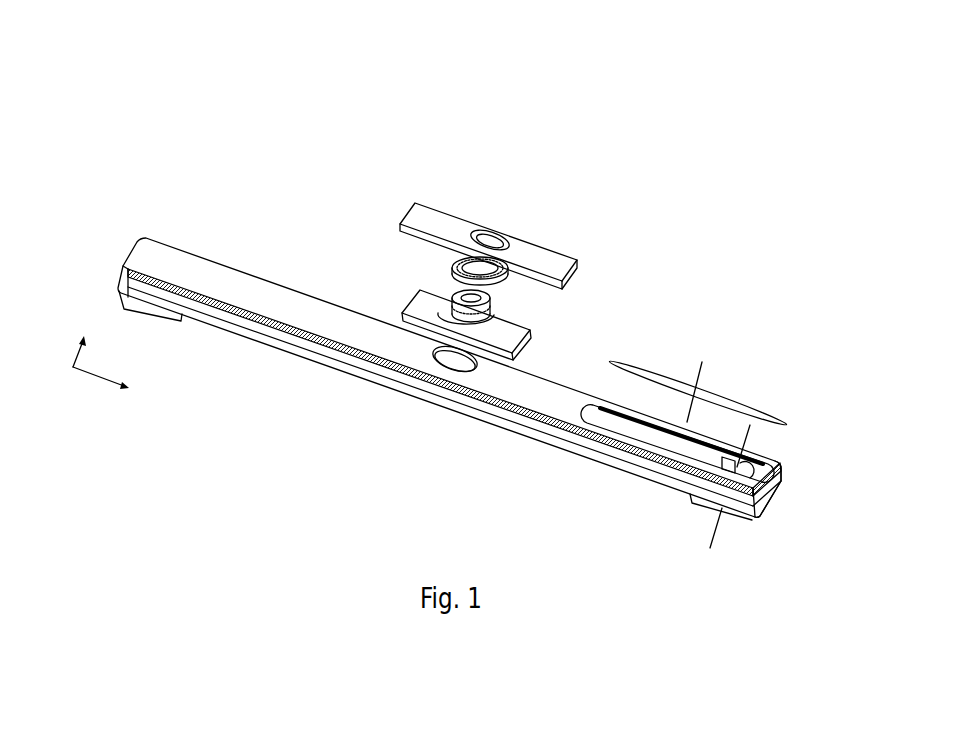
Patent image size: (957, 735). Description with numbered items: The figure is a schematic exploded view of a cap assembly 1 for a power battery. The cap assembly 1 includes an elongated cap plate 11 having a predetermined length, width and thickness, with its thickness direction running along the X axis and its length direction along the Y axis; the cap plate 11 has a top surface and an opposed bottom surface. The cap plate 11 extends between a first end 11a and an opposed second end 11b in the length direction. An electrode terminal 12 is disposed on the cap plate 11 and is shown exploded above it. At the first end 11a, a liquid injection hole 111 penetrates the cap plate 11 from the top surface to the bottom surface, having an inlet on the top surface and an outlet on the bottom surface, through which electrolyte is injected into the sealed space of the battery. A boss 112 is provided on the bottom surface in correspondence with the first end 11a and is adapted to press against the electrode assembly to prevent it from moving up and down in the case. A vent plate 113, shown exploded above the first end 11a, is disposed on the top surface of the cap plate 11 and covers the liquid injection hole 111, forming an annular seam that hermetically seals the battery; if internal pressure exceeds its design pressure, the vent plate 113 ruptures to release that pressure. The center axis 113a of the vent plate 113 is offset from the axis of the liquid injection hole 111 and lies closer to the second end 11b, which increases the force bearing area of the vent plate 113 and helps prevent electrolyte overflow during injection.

The cap assembly 1 is at (512, 48).
The cap plate 11 is at (227, 278).
The first end 11a is at (796, 480).
The second end 11b is at (170, 220).
The liquid injection hole 111 is at (751, 461).
The boss 112 is at (715, 508).
The vent plate 113 is at (728, 401).
The axis 113a is at (702, 365).
The electrode terminal 12 is at (367, 225).